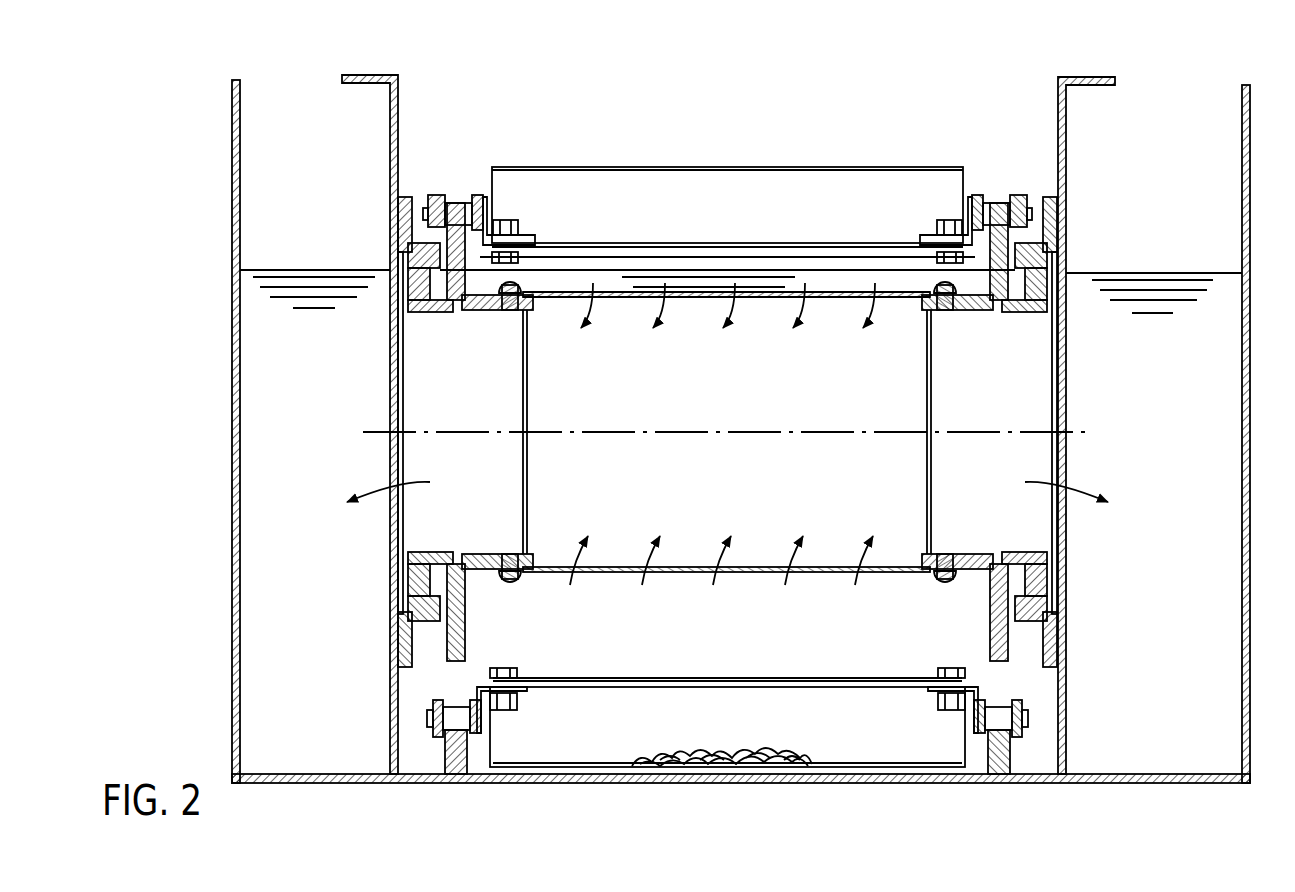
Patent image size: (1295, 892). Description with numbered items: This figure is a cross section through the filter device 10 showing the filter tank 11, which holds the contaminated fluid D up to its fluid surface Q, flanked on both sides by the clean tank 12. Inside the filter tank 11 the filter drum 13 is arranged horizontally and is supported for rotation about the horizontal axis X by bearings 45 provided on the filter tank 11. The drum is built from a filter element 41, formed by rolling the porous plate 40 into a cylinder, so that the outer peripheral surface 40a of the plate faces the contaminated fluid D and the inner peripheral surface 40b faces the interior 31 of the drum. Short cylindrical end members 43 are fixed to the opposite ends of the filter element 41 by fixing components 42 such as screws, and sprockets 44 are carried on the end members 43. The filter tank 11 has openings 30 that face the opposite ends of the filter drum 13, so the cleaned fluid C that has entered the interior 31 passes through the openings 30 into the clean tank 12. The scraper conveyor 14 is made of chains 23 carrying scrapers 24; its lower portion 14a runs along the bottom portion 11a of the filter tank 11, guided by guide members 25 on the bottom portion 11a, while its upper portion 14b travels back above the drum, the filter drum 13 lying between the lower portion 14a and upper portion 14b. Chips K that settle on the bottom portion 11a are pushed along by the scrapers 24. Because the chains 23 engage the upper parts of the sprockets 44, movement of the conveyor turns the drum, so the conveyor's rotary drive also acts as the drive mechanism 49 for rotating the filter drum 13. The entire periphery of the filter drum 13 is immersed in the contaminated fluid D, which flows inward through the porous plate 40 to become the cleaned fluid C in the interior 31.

The filter device 10 is at (737, 434).
The filter tank 11 is at (741, 447).
The bottom portion 11a is at (865, 770).
The clean tank 12 is at (234, 208).
The filter drum 13 is at (608, 288).
The scraper conveyor 14 is at (727, 458).
The lower portion 14a is at (553, 770).
The upper portion 14b is at (553, 165).
The chains 23 is at (460, 202).
The scrapers 24 is at (755, 183).
The guide members 25 is at (452, 748).
The openings 30 is at (395, 400).
The interior 31 is at (727, 432).
The porous plate 40 is at (726, 386).
The outer peripheral surface 40a is at (888, 292).
The inner peripheral surface 40b is at (877, 298).
The filter element 41 is at (747, 287).
The fixing components 42 is at (508, 310).
The end members 43 is at (437, 315).
The sprockets 44 is at (412, 240).
The bearings 45 is at (393, 300).
The drive mechanism 49 is at (480, 194).
The cleaned fluid C is at (310, 285).
The contaminated fluid D is at (775, 283).
The fluid surface Q is at (845, 273).
The chips K is at (783, 752).
The horizontal axis X is at (780, 432).